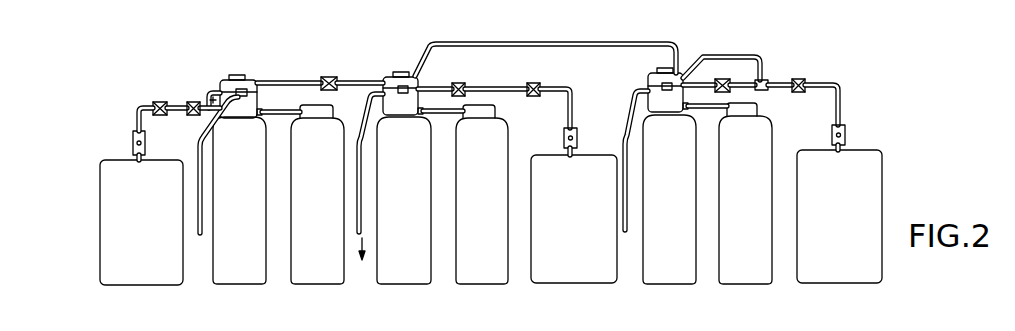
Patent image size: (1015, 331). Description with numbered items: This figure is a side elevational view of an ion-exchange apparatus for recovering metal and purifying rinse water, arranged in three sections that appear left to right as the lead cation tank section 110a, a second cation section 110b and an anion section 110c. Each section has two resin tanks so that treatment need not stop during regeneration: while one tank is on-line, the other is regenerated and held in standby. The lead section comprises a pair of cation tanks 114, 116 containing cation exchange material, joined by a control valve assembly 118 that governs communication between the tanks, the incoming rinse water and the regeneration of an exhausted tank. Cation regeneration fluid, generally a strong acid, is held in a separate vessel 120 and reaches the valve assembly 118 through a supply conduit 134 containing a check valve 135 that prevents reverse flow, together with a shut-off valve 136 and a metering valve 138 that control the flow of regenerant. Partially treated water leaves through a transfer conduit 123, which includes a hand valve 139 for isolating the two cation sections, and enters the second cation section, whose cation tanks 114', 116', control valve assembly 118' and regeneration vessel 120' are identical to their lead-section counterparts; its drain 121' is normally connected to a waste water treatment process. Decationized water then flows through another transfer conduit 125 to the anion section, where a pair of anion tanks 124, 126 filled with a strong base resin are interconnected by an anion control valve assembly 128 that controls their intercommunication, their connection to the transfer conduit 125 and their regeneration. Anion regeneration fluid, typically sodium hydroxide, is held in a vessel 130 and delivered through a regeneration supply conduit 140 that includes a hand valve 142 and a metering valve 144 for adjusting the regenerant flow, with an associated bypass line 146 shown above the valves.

The lead cation tank section 110a is at (242, 298).
The second gas delivery system 110b is at (505, 296).
The third gas delivery system 110c is at (720, 298).
The cation tank 114 is at (239, 200).
The cation tank 116 is at (317, 194).
The cation tank 114' is at (404, 200).
The cation tank 116' is at (482, 194).
The control valve assembly 118 is at (250, 133).
The control valve assembly 118' is at (411, 123).
The vessel 120 is at (141, 222).
The vessel 120' is at (574, 219).
The drain 121' is at (360, 279).
The transfer conduit 123 is at (283, 82).
The anion tank 124 is at (682, 243).
The transfer conduit 125 is at (533, 42).
The anion tank 126 is at (763, 243).
The anion control valve assembly 128 is at (655, 73).
The vessel 130 is at (858, 243).
The supply conduit 134 is at (177, 103).
The check valve 135 is at (151, 103).
The shut-off valve 136 is at (133, 138).
The metering valve 138 is at (195, 101).
The hand valve 139 is at (331, 73).
The regeneration supply conduit 140 is at (790, 71).
The hand valve 142 is at (848, 130).
The metering valve 144 is at (730, 92).
The bypass tube 146 is at (738, 42).